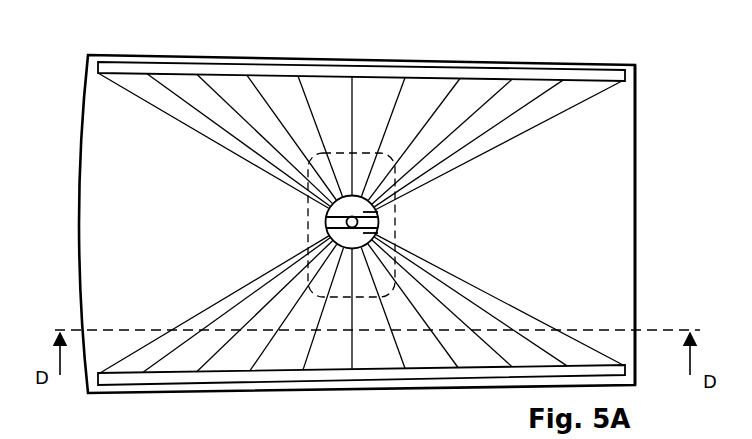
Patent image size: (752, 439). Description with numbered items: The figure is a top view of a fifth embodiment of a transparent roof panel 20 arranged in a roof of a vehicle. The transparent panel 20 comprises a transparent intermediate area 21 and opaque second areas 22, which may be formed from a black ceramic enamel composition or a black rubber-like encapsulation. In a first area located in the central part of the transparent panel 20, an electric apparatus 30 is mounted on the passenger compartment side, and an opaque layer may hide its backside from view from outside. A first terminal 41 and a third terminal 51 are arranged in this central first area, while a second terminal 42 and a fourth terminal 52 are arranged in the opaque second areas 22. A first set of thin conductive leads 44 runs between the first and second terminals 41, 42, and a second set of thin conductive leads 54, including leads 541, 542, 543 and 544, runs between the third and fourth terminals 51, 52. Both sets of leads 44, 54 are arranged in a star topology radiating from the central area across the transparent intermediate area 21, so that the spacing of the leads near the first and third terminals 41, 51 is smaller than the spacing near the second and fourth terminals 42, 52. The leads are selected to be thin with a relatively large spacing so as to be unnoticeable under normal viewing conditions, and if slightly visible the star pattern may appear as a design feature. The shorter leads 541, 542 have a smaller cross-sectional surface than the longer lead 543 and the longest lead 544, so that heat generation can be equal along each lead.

The transparent roof panel 20 is at (600, 51).
The transparent intermediate area 21 is at (604, 185).
The opaque second areas 22 is at (349, 226).
The electric apparatus 30 is at (362, 159).
The first terminal 41 is at (380, 215).
The second terminal 42 is at (381, 71).
The first set of thin conductive leads 44 is at (229, 99).
The third terminal 51 is at (380, 230).
The fourth terminal 52 is at (358, 377).
The second set of thin conductive leads 54 is at (326, 337).
The lead 541 is at (354, 344).
The lead 542 is at (311, 341).
The longer lead 543 is at (245, 328).
The longest lead 544 is at (137, 348).